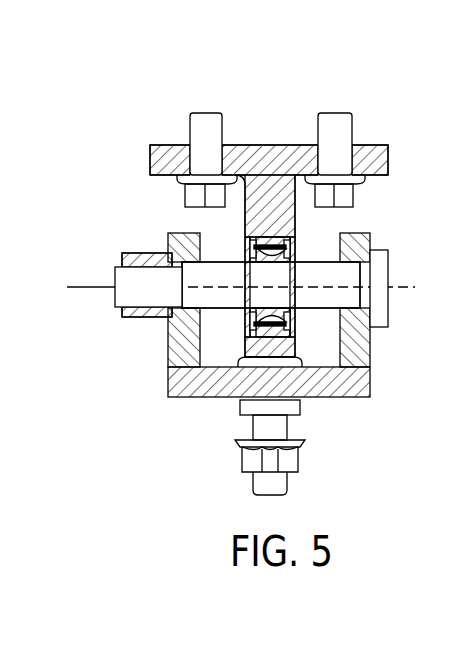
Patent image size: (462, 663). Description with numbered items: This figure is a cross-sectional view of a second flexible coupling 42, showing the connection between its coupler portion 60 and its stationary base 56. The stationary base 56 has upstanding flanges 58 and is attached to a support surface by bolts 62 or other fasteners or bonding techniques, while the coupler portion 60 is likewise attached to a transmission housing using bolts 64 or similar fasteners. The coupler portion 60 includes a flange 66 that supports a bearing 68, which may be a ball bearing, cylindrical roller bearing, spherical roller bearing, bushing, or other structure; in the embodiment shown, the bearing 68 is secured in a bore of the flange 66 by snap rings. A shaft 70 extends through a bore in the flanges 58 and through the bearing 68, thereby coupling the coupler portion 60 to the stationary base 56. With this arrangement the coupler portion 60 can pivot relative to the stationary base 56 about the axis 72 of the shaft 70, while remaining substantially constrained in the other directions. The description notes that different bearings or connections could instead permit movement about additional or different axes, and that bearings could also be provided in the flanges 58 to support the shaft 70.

The second flexible coupling 42 is at (386, 114).
The stationary base 56 is at (367, 386).
The flanges 58 is at (182, 358).
The coupler portion 60 is at (376, 164).
The bolts 62 is at (289, 483).
The bolts 64 is at (212, 118).
The flange 66 is at (298, 198).
The bearing 68 is at (293, 252).
The shaft 70 is at (390, 302).
The axis 72 is at (96, 286).